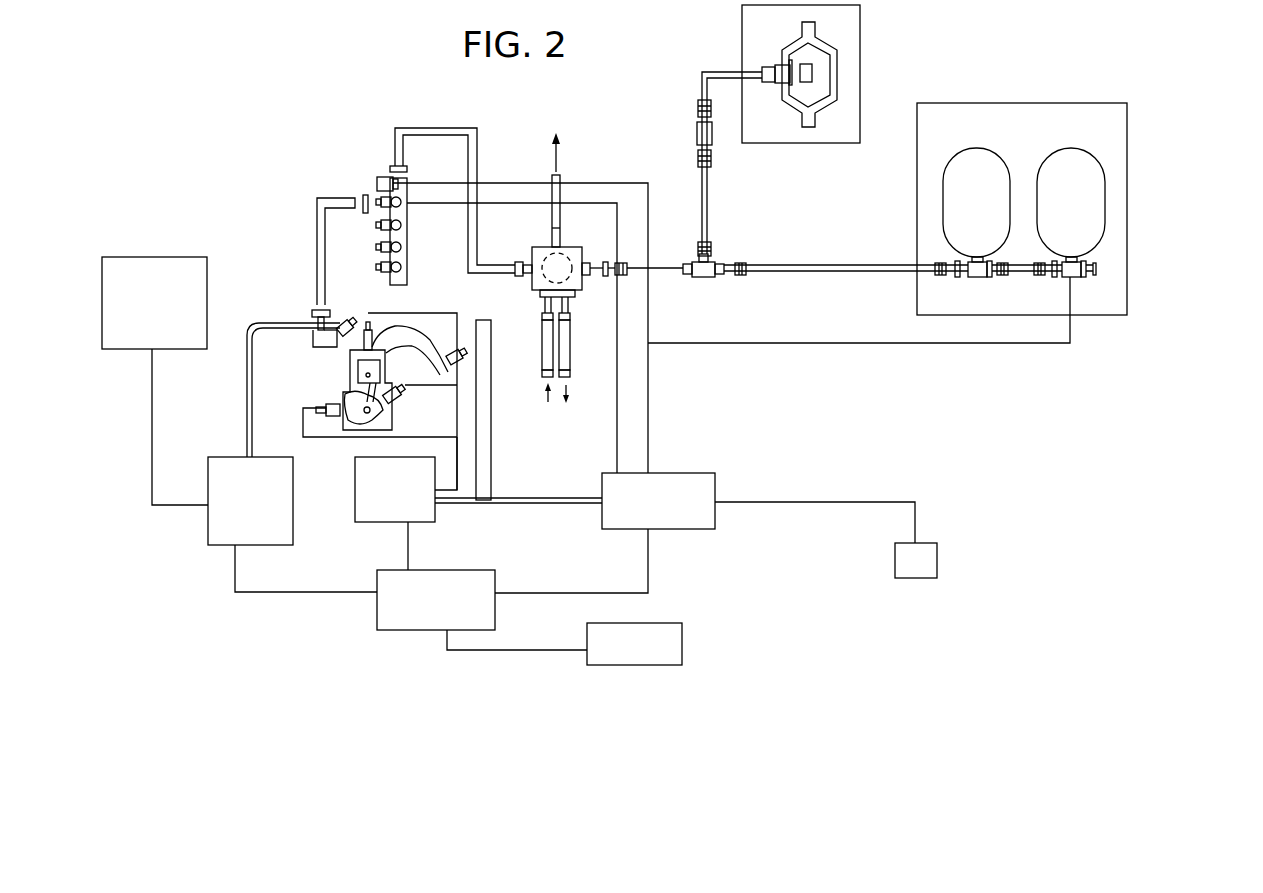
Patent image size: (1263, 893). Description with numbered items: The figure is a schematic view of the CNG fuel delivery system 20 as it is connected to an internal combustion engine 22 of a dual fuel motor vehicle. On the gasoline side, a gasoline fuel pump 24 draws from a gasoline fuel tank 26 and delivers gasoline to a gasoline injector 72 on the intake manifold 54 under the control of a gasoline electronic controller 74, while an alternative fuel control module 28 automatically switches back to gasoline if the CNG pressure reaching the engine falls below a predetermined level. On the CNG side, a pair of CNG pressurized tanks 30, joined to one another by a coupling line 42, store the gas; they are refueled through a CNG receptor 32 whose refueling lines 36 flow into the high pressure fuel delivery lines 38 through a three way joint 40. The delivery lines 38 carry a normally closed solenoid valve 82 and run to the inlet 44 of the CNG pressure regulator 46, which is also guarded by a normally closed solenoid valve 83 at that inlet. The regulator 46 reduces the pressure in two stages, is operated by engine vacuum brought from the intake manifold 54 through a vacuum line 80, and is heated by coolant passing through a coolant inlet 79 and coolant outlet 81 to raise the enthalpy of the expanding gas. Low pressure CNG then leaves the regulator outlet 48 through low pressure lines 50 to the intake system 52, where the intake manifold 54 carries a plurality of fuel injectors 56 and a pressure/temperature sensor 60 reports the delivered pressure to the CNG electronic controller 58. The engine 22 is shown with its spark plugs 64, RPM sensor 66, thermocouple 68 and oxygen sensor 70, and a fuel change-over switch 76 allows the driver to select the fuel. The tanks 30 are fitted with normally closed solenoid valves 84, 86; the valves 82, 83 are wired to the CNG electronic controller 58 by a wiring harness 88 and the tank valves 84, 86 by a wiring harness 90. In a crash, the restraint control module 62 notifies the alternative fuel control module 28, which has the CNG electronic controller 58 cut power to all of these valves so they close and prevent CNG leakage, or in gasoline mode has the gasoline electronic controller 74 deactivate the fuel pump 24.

The CNG fuel delivery system 20 is at (1143, 57).
The internal combustion engine 22 is at (363, 355).
The gasoline fuel pump 24 is at (208, 530).
The gasoline fuel tank 26 is at (175, 257).
The alternative fuel control module 28 is at (377, 617).
The CNG pressurized tanks 30 is at (1012, 183).
The CNG receptor 32 is at (822, 40).
The refueling lines 36 is at (702, 200).
The high pressure fuel delivery lines 38 is at (800, 272).
The three way joint 40 is at (705, 277).
The coupling line 42 is at (1022, 273).
The inlet 44 is at (588, 280).
The CNG pressure regulator 46 is at (605, 290).
The CNG pressure regulator outlet 48 is at (518, 278).
The low pressure lines 50 is at (477, 158).
The intake system 52 is at (386, 190).
The intake manifold 54 is at (400, 283).
The fuel injectors 56 is at (400, 225).
The CNG electronic controller 58 is at (675, 518).
The pressure/temperature sensor 60 is at (377, 185).
The restraint control module 62 is at (638, 663).
The spark plugs 64 is at (367, 330).
The RPM sensor 66 is at (326, 406).
The thermocouple 68 is at (397, 398).
The oxygen sensor 70 is at (458, 360).
The gasoline injector 72 is at (341, 346).
The gasoline electronic controller 74 is at (380, 512).
The fuel change-over switch 76 is at (925, 562).
The coolant inlet 79 is at (551, 353).
The vacuum line 80 is at (562, 182).
The coolant outlet 81 is at (563, 353).
The normally closed solenoid valve 82 is at (622, 263).
The normally closed solenoid valve 83 is at (589, 280).
The normally closed solenoid valve 84 is at (978, 277).
The normally closed solenoid valve 86 is at (1072, 278).
The wiring harness 88 is at (617, 418).
The wiring harness 90 is at (870, 343).